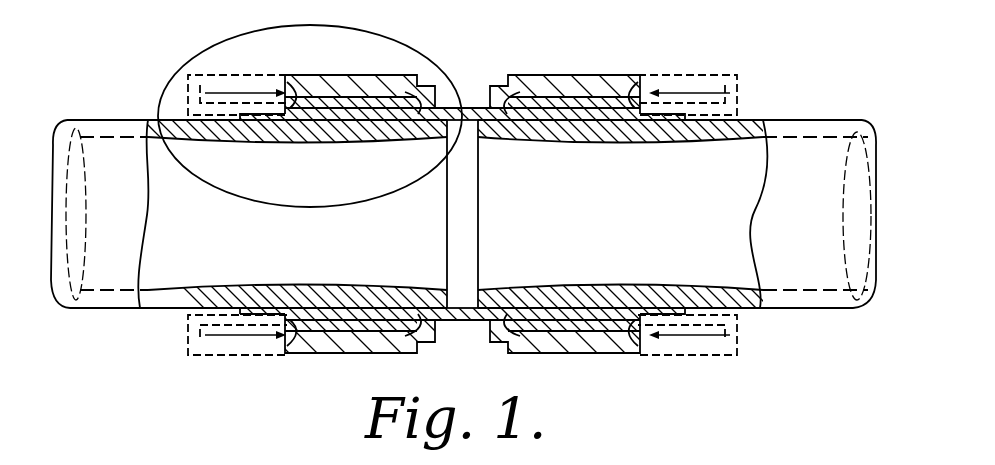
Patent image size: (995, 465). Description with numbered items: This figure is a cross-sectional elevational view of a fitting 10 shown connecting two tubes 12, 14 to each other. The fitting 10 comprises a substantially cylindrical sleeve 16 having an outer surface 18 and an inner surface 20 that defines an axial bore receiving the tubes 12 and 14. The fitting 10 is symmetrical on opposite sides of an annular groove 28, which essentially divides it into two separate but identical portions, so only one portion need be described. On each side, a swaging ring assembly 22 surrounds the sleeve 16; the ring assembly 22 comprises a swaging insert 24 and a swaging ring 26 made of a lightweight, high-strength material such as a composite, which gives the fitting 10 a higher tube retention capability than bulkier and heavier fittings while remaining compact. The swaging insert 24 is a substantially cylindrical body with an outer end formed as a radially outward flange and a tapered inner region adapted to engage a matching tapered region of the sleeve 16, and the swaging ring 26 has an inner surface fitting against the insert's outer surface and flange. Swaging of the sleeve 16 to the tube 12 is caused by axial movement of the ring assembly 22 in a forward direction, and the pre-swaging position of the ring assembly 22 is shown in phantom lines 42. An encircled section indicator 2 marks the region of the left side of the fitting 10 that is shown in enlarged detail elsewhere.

The section line 2- 2 is at (372, 22).
The fitting 10 is at (650, 58).
The tube 12 is at (86, 119).
The tube 14 is at (823, 121).
The sleeve 16 is at (503, 75).
The outer surface 18 is at (242, 115).
The inner surface 20 is at (277, 131).
The swaging ring assembly 22 is at (706, 62).
The swaging insert 24 is at (291, 76).
The swaging ring 26 is at (387, 78).
The annular groove 28 is at (471, 107).
The phantom lines 42 is at (188, 90).